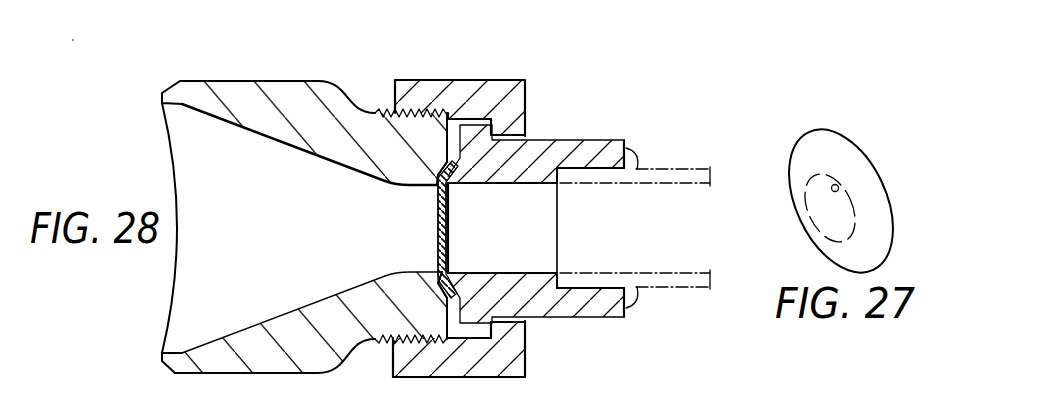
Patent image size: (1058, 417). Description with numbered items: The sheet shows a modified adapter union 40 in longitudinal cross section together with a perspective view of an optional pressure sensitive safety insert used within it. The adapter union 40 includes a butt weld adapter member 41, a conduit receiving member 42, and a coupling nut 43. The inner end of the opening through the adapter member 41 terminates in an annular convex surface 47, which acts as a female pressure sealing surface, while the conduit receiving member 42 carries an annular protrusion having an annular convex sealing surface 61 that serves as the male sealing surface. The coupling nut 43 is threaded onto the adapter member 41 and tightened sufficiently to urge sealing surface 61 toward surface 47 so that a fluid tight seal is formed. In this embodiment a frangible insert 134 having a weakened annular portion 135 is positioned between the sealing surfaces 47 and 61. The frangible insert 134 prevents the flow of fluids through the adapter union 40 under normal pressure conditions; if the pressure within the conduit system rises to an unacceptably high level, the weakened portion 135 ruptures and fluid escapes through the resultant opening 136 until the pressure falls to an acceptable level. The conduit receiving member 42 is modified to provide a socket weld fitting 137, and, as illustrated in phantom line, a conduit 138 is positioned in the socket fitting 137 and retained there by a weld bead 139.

In FIG. 28, the adapter union 40 is at (372, 67).
In FIG. 28, the butt weld adapter member 41 is at (259, 80).
In FIG. 28, the conduit receiving member 42 is at (572, 318).
In FIG. 28, the coupling nut 43 is at (458, 80).
In FIG. 28, the annular convex surface 47 is at (430, 188).
In FIG. 28, the annular convex sealing surface 61 is at (440, 292).
In FIG. 28, the frangible insert 134 is at (447, 262).
In FIG. 27, the frangible insert 134 is at (884, 231).
In FIG. 28, the weakened annular portion 135 is at (447, 226).
In FIG. 27, the weakened annular portion 135 is at (802, 182).
In FIG. 28, the opening 136 is at (447, 190).
In FIG. 27, the opening 136 is at (837, 185).
In FIG. 28, the socket weld fitting 137 is at (607, 292).
In FIG. 28, the conduit 138 is at (692, 168).
In FIG. 28, the weld bead 139 is at (644, 150).